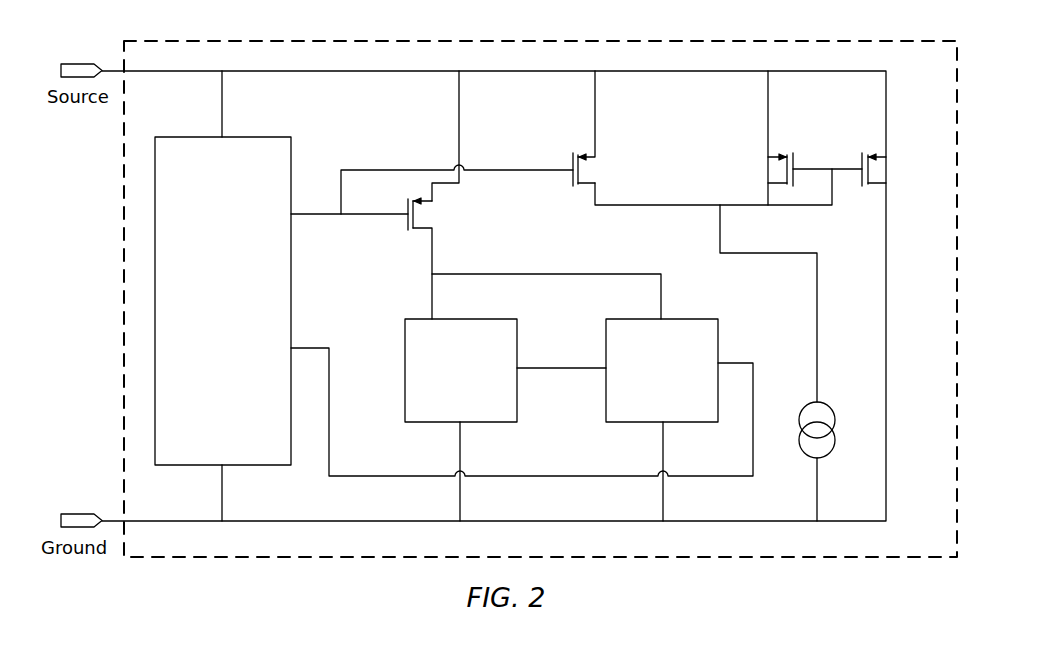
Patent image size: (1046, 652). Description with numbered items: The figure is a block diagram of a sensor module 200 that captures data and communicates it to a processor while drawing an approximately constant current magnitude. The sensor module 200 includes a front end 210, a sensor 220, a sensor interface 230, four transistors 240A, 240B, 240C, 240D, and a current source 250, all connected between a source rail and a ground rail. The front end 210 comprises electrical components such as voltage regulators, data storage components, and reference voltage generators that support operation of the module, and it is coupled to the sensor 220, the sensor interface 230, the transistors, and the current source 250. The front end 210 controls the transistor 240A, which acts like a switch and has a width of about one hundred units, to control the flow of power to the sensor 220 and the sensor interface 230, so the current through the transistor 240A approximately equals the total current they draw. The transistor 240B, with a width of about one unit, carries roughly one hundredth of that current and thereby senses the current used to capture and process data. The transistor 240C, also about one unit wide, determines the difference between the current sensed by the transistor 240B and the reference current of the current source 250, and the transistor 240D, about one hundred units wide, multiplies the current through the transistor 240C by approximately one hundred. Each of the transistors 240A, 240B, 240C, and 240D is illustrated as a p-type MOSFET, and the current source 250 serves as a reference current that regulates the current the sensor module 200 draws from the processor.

The sensor module 200 is at (124, 305).
The front end 210 is at (154, 192).
The sensor 220 is at (405, 322).
The sensor interface 230 is at (606, 325).
The transistor 240A is at (449, 195).
The transistor 240B is at (613, 128).
The transistor 240C is at (784, 169).
The transistor 240D is at (903, 169).
The current source 250 is at (832, 410).